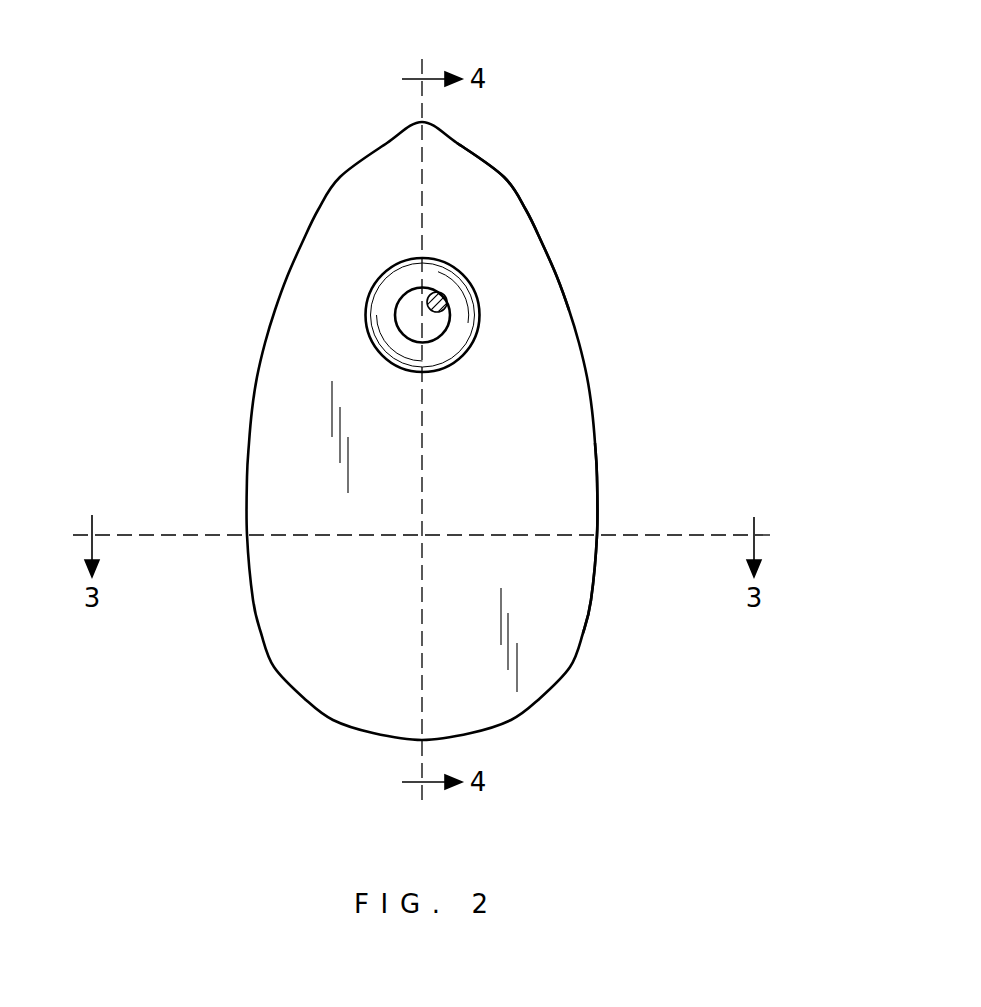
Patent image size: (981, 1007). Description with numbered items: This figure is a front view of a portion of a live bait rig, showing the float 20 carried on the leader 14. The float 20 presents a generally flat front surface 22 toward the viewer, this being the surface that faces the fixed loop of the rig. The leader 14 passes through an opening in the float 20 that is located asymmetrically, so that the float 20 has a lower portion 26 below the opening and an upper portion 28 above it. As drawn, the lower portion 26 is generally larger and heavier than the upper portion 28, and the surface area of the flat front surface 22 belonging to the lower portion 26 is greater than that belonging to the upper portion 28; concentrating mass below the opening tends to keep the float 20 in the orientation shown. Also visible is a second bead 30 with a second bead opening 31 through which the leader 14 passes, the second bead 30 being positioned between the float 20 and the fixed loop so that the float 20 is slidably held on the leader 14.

The leader 14 is at (444, 309).
The float 20 is at (342, 178).
The flat front surface 22 is at (497, 456).
The lower portion 26 is at (616, 503).
The upper portion 28 is at (553, 203).
The second bead 30 is at (450, 263).
The second bead opening 31 is at (408, 302).